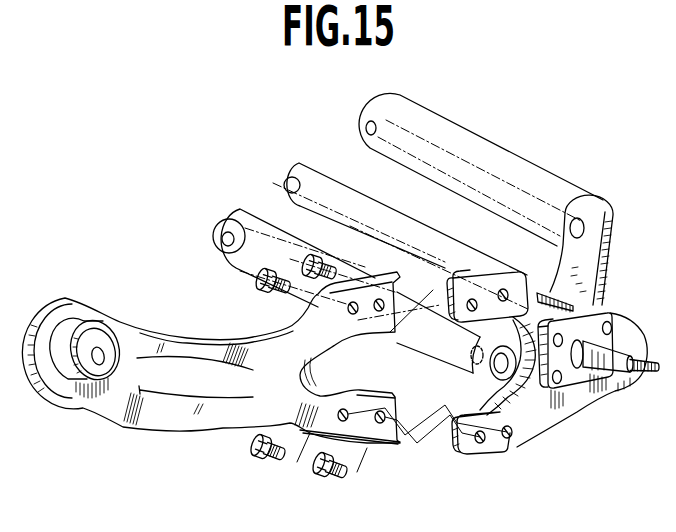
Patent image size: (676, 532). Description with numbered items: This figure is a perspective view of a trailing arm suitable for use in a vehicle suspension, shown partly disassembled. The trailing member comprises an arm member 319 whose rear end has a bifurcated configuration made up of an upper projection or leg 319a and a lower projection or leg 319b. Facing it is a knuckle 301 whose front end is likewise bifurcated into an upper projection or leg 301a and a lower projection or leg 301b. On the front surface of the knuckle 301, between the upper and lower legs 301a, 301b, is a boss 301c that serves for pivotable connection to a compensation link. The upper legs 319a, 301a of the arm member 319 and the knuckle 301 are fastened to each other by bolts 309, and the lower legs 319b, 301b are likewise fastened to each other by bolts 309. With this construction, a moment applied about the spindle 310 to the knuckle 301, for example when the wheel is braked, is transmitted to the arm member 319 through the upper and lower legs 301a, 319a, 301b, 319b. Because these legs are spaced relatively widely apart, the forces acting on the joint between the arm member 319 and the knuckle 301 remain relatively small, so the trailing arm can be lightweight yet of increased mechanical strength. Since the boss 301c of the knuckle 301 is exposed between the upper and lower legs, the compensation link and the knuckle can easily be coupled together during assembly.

The knuckle 301 is at (563, 398).
The upper projection or leg 301a is at (493, 290).
The lower projection or leg 301b is at (493, 443).
The boss 301c is at (492, 377).
The bolts 309 is at (257, 452).
The spindle 310 is at (612, 377).
The arm member 319 is at (163, 415).
The upper projection or leg 319a is at (308, 339).
The lower projection or leg 319b is at (397, 410).